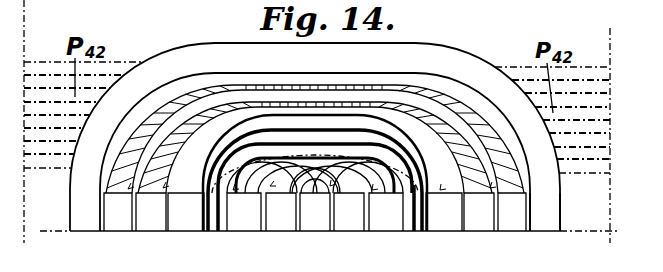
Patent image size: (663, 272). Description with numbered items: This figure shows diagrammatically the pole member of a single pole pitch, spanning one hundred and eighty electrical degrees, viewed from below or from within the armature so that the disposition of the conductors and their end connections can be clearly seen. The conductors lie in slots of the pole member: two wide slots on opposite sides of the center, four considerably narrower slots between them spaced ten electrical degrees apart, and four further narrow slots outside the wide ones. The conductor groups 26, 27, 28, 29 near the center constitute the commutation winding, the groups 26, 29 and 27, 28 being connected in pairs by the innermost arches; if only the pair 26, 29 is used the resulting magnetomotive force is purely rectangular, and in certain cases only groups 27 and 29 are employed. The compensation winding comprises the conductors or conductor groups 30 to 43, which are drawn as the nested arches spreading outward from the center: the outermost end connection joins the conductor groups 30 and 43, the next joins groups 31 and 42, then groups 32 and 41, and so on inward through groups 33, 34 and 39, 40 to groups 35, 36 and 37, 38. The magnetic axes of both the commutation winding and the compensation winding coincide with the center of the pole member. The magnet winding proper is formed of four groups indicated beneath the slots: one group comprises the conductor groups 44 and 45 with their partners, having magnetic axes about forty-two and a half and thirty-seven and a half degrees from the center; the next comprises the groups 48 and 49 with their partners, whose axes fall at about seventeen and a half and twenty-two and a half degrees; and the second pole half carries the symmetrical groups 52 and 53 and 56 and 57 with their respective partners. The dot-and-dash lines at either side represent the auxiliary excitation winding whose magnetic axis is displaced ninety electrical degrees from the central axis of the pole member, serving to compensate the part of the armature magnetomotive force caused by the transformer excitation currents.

The conductor group 26 is at (282, 196).
The conductor group 27 is at (315, 205).
The conductor group 28 is at (315, 195).
The conductor group 29 is at (332, 198).
The conductor group of compensation winding 30 is at (315, 137).
The conductor group of compensation winding 31 is at (314, 158).
The conductor group of compensation winding 32 is at (314, 166).
The conductor group of compensation winding 33 is at (297, 173).
The conductor group of compensation winding 34 is at (300, 180).
The conductor group of compensation winding 35 is at (315, 188).
The conductor group of compensation winding 36 is at (315, 187).
The conductor group of compensation winding 37 is at (386, 212).
The conductor group of compensation winding 38 is at (358, 192).
The conductor group of compensation winding 39 is at (433, 208).
The conductor group of compensation winding 40 is at (444, 212).
The conductor group of compensation winding 41 is at (479, 212).
The conductor group of compensation winding 42 is at (512, 212).
The conductor group of compensation winding 43 is at (545, 212).
The conductor group of magnet winding 44 is at (129, 188).
The conductor group of magnet winding 45 is at (164, 187).
The conductor group of magnet winding 48 is at (271, 186).
The conductor group of magnet winding 49 is at (234, 190).
The conductor group of magnet winding 52 is at (330, 186).
The conductor group of magnet winding 53 is at (372, 190).
The conductor group of magnet winding 56 is at (490, 188).
The conductor group of magnet winding 57 is at (440, 190).